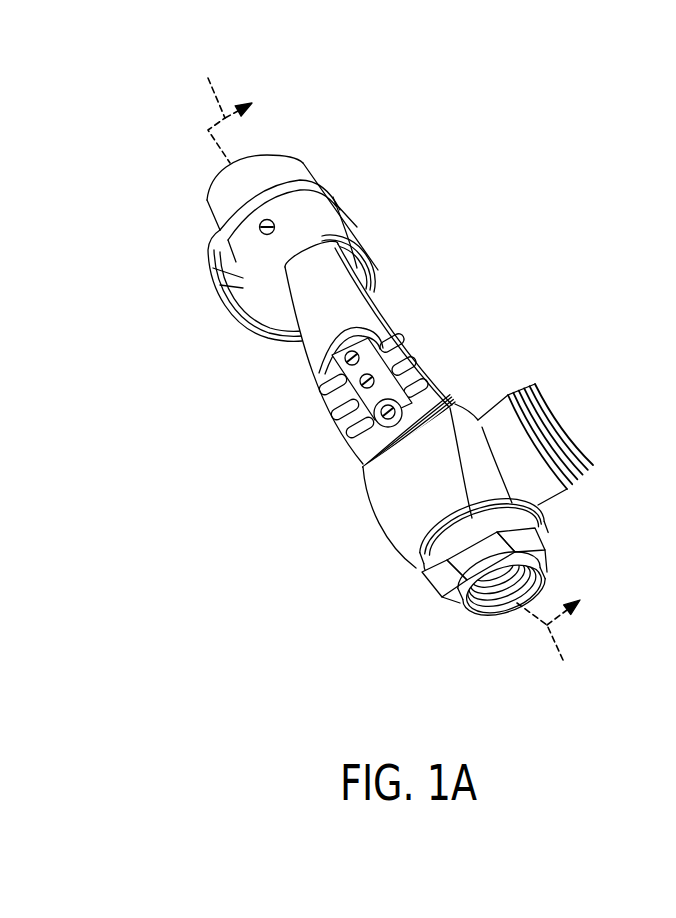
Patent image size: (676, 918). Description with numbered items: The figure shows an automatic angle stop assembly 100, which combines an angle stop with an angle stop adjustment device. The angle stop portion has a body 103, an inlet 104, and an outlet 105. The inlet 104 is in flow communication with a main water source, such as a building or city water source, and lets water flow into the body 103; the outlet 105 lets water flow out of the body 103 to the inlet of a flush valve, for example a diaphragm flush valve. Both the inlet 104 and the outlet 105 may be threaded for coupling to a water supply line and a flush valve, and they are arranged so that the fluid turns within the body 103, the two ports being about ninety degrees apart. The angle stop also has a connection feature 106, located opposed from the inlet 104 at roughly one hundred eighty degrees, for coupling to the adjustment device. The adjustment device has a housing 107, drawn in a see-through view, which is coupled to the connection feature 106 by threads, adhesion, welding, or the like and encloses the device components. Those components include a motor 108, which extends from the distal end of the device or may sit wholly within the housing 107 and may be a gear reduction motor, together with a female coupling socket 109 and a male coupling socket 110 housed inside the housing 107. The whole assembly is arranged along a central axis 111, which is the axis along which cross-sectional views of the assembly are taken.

The automatic angle stop assembly 100 is at (146, 119).
The body 103 is at (383, 525).
The inlet 104 is at (480, 620).
The outlet 105 is at (560, 410).
The connection feature 106 is at (362, 466).
The housing 107 is at (380, 310).
The motor 108 is at (297, 192).
The female coupling socket 109 is at (312, 320).
The male coupling socket 110 is at (340, 353).
The central axis 111 is at (388, 372).